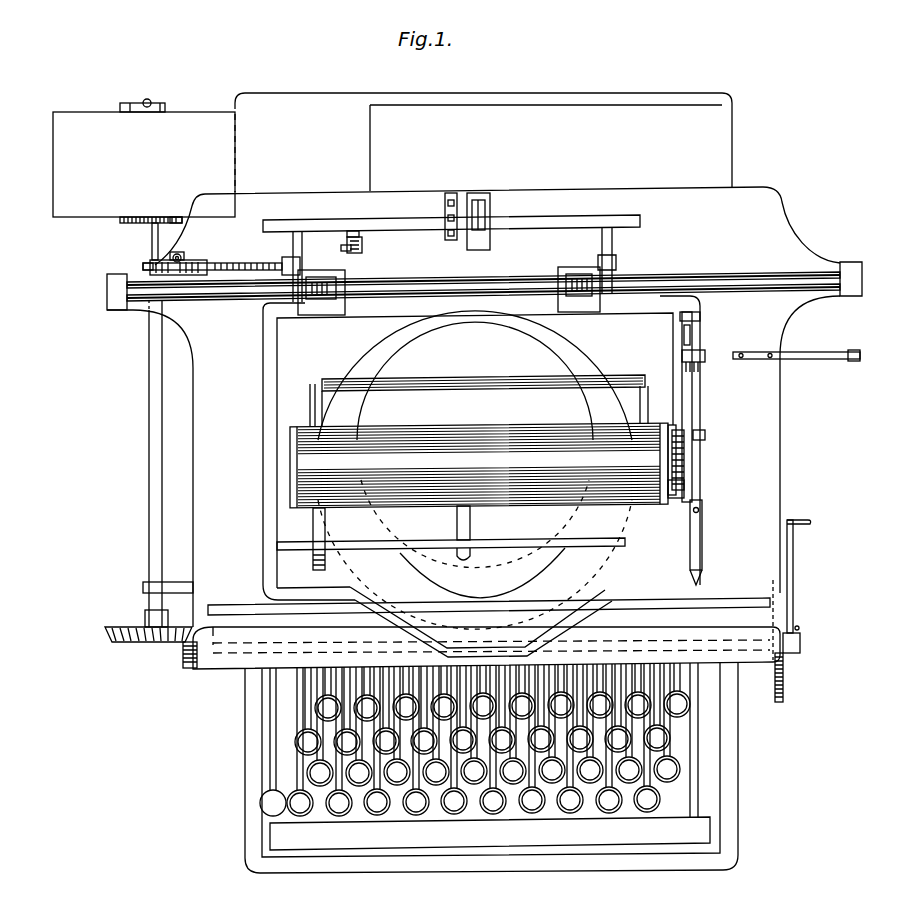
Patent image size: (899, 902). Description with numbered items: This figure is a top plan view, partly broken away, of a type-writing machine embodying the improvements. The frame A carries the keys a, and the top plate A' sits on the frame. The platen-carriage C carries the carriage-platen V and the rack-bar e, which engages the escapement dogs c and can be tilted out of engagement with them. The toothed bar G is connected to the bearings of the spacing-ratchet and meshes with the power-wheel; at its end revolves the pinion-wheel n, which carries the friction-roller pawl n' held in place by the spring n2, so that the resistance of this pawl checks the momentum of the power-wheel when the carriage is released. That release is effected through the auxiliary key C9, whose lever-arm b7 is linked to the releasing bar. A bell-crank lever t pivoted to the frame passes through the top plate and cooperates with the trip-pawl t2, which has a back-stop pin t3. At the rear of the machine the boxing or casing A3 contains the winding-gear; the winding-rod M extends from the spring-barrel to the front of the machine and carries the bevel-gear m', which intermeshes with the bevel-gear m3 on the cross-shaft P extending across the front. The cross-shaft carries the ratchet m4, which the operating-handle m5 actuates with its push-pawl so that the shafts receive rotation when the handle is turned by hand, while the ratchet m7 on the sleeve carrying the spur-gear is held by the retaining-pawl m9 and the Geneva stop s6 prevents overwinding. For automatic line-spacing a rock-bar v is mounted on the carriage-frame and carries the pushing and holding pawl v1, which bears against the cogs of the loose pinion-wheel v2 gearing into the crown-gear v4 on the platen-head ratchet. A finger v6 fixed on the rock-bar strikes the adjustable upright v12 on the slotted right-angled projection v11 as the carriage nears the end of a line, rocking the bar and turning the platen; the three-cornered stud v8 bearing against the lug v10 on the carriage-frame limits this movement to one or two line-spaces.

The boxing or casing A3 is at (150, 193).
The Geneva stop s6 is at (127, 103).
The rack-bar e is at (451, 250).
The dogs c is at (478, 218).
The bell-crank lever t is at (340, 248).
The trip-pawl t2 is at (362, 246).
The back-stop pin t3 is at (350, 231).
The platen-carriage C is at (263, 371).
The carriage-platen V is at (479, 465).
The rock-bar v is at (693, 408).
The pushing and holding pawl v1 is at (684, 480).
The loose pinion-wheel v2 is at (688, 432).
The crown-gear v4 is at (706, 434).
The finger v6 is at (706, 355).
The three-cornered stud v8 is at (686, 330).
The lug or projection v10 is at (700, 318).
The right-angled projection v11 is at (800, 354).
The adjustable upright v12 is at (856, 361).
The top plate A' is at (226, 531).
The winding-rod M is at (149, 500).
The bevel-gear m' is at (138, 645).
The bevel-gear m3 is at (190, 668).
The ratchet m4 is at (784, 687).
The operating-handle m5 is at (794, 596).
The ratchet m7 is at (122, 224).
The retaining-pawl m9 is at (178, 217).
The pinion-wheel n is at (132, 257).
The friction-roller pawl n' is at (154, 246).
The spring n2 is at (183, 260).
The toothed bar G is at (232, 264).
The cross-shaft P is at (240, 650).
The frame A is at (500, 767).
The lever-arm b7 is at (272, 740).
The keys a is at (494, 806).
The auxiliary key C9 is at (262, 806).